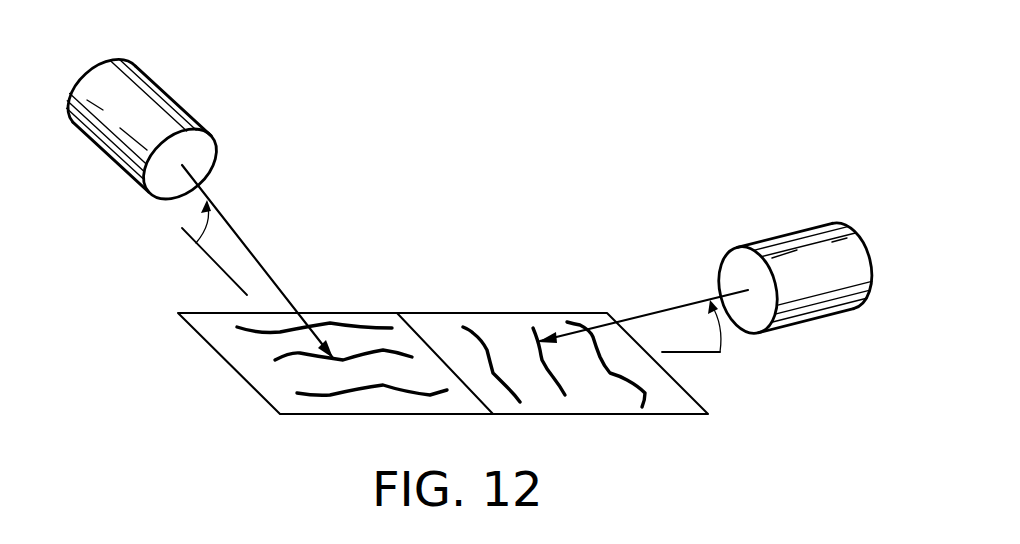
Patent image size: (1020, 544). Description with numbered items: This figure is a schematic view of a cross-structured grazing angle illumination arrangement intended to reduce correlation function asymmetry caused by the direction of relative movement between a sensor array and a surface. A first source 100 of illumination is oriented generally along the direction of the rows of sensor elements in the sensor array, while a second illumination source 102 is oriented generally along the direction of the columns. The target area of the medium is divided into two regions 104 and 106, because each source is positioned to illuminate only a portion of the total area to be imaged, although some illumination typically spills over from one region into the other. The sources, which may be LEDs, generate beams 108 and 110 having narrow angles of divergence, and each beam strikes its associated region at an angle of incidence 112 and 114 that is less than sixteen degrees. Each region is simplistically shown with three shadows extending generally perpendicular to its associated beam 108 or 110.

The first source of illumination 100 is at (782, 236).
The second illumination source 102 is at (177, 108).
The first illuminated region 104 is at (350, 316).
The second illuminated region 106 is at (436, 316).
The beam 108 is at (647, 313).
The beam 110 is at (254, 257).
The angle of incidence 112 is at (720, 352).
The angle of incidence 114 is at (196, 213).